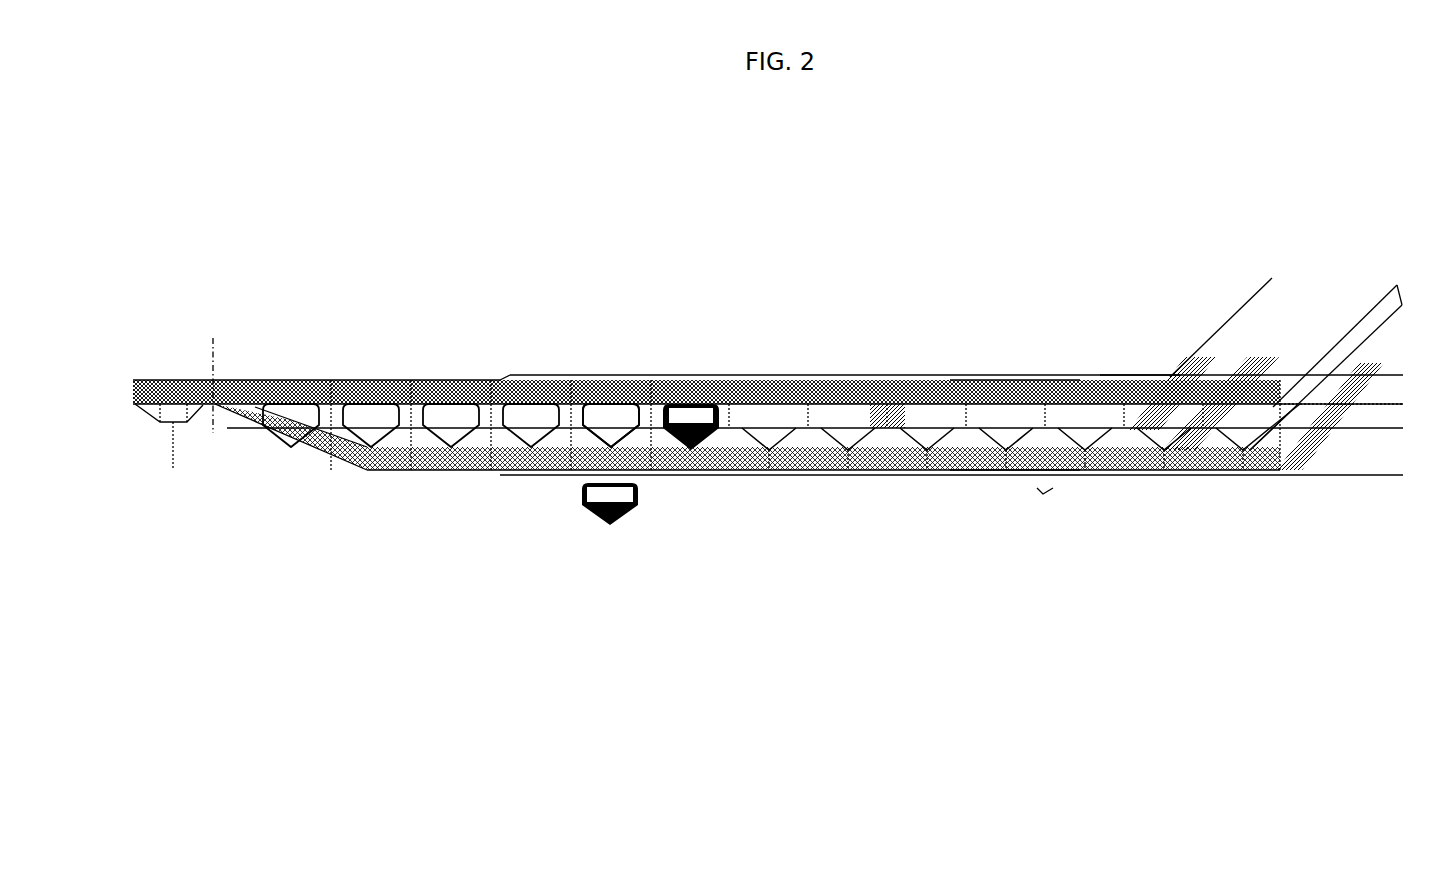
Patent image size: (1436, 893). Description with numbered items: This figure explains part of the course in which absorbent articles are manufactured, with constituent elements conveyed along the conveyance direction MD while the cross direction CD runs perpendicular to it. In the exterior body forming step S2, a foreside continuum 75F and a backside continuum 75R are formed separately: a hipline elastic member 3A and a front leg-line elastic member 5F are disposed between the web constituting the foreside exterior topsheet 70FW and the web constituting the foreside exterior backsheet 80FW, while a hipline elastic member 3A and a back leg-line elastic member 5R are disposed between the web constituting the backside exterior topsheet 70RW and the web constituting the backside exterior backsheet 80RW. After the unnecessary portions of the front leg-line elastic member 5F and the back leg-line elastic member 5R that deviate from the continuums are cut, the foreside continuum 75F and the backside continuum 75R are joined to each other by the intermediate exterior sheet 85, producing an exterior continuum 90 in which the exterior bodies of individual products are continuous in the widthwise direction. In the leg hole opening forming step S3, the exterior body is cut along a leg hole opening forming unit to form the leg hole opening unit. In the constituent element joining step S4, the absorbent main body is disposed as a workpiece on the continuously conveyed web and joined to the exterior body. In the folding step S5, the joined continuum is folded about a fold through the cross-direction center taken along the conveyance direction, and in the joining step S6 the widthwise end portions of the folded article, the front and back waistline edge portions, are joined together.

The exterior body forming step S2 is at (1127, 352).
The leg hole opening forming step S3 is at (703, 368).
The constituent element joining step S4 is at (553, 368).
The folding step S5 is at (298, 448).
The joining step S6 is at (226, 338).
The exterior continuum 90 is at (798, 368).
The intermediate exterior sheet 85 is at (893, 403).
The foreside continuum 75F is at (1027, 368).
The backside continuum 75R is at (1008, 486).
The web constituting the foreside exterior topsheet 70FW is at (1276, 332).
The web constituting the backside exterior topsheet 70RW is at (1193, 472).
The hipline elastic member 3A is at (1302, 362).
The front leg-line elastic member 5F is at (1352, 335).
The back leg-line elastic member 5R is at (1302, 432).
The web constituting the foreside exterior backsheet 80FW is at (1403, 478).
The web constituting the backside exterior backsheet 80RW is at (1372, 466).
The conveyance direction MD is at (820, 250).
The cross direction CD is at (347, 246).